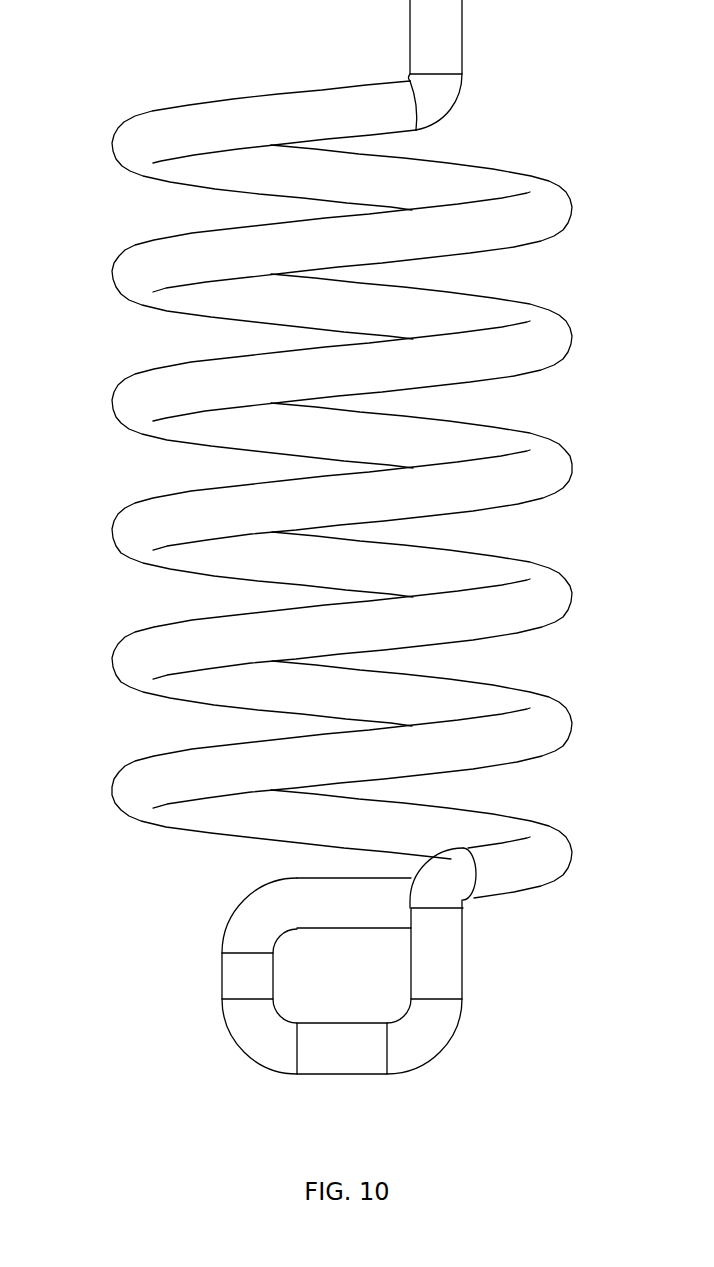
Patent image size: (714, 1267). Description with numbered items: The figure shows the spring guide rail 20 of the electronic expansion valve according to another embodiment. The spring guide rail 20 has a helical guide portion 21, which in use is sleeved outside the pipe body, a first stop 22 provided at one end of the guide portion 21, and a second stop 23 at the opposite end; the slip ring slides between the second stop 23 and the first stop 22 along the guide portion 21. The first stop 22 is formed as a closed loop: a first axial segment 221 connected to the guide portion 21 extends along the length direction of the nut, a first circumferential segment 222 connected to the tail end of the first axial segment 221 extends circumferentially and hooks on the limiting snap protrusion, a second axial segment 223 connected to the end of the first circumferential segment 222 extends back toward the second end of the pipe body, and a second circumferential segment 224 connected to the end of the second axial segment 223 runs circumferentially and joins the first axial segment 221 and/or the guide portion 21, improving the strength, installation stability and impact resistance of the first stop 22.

The spring guide rail 20 is at (118, 73).
The guide portion 21 is at (538, 602).
The first stop 22 is at (391, 951).
The first axial segment 221 is at (450, 952).
The first circumferential segment 222 is at (357, 1057).
The second axial segment 223 is at (238, 976).
The second circumferential segment 224 is at (338, 900).
The second stop 23 is at (437, 42).